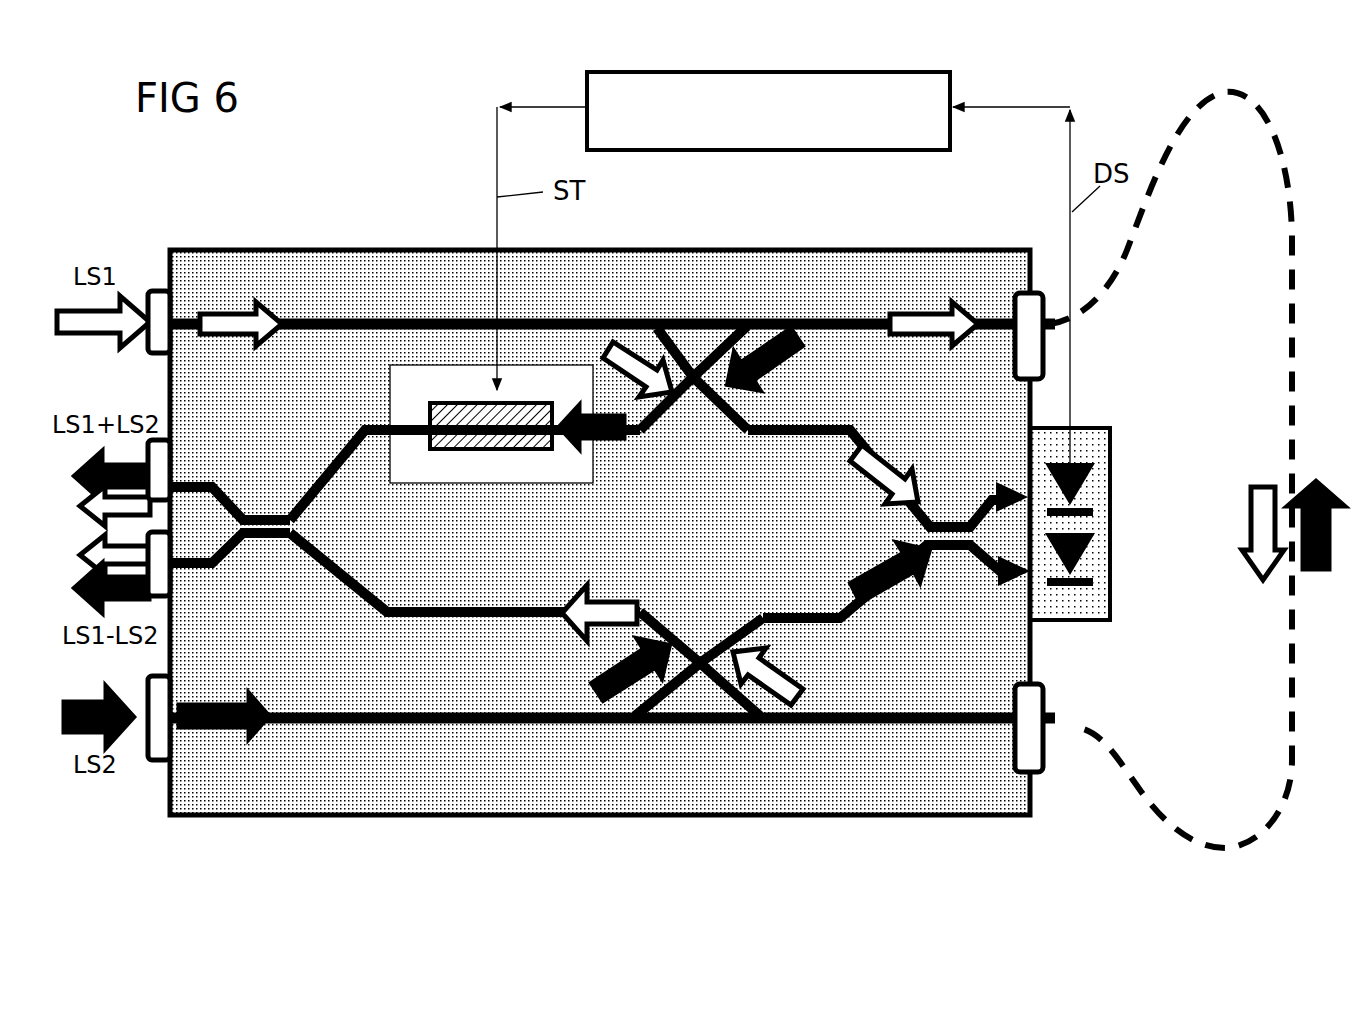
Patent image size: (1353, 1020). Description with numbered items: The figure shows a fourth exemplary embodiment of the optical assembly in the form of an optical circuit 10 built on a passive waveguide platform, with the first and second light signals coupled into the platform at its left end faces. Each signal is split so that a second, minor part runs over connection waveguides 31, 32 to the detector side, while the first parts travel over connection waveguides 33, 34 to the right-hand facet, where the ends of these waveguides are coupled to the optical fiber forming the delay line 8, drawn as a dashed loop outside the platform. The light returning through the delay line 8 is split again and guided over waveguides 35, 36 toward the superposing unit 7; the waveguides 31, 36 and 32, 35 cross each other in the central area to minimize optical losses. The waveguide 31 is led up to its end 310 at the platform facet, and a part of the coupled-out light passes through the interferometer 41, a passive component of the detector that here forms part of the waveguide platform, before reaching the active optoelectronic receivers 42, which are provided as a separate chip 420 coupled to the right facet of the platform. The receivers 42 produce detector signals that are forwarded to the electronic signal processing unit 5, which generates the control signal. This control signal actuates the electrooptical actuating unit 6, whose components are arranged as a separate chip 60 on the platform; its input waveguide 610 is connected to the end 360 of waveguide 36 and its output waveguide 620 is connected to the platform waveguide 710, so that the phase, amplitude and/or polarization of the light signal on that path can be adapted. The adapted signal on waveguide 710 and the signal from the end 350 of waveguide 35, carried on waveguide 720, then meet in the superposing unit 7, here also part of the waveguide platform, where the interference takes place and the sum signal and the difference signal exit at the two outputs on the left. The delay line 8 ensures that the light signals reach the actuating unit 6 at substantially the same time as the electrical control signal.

The electronic signal processing unit 5 is at (915, 103).
The optical circuit 10 is at (1048, 76).
The electrooptical actuating unit 6 is at (470, 412).
The separate chip of the actuating unit 60 is at (412, 357).
The input waveguide of the chip 610 is at (553, 417).
The output waveguide of the chip 620 is at (416, 438).
The superposing unit 7 is at (267, 500).
The waveguide of the waveguide platform 710 is at (383, 415).
The lower coupler arm waveguide 720 is at (362, 607).
The delay line 8 is at (1295, 326).
The connection waveguide 31 is at (752, 410).
The end of waveguide 31 310 is at (793, 437).
The connection waveguide 32 is at (740, 628).
The connection waveguide 33 is at (833, 318).
The connection waveguide 34 is at (455, 726).
The waveguide 35 is at (682, 640).
The end of waveguide 35 350 is at (613, 598).
The waveguide 36 is at (680, 407).
The end of waveguide 36 360 is at (633, 437).
The interferometer 41 is at (955, 568).
The active optoelectronic receivers 42 is at (1130, 441).
The separate chip of the receivers 420 is at (1128, 508).